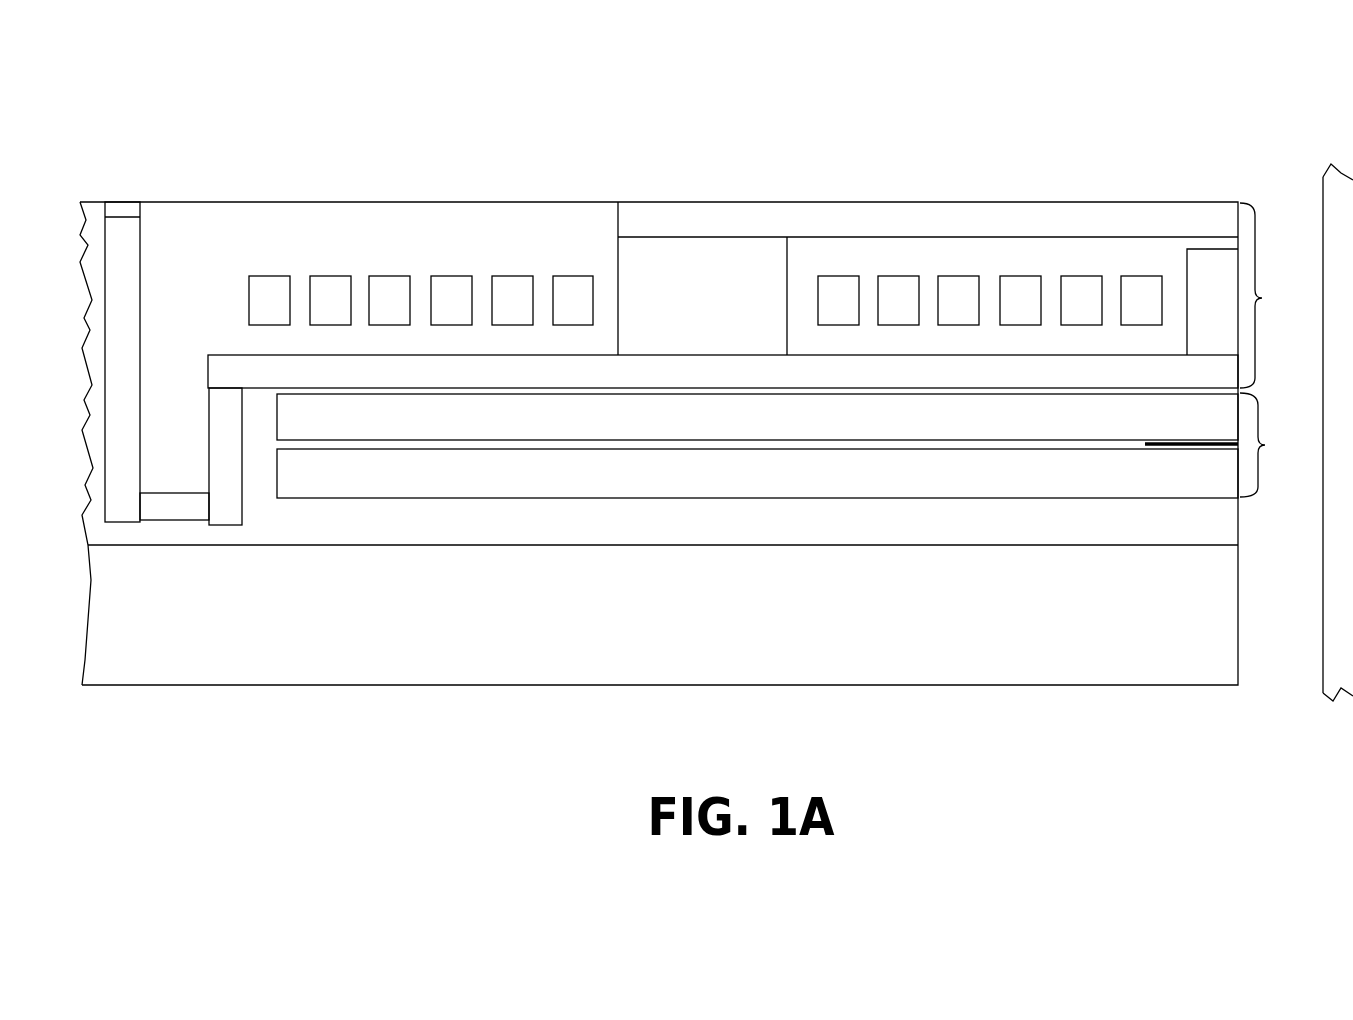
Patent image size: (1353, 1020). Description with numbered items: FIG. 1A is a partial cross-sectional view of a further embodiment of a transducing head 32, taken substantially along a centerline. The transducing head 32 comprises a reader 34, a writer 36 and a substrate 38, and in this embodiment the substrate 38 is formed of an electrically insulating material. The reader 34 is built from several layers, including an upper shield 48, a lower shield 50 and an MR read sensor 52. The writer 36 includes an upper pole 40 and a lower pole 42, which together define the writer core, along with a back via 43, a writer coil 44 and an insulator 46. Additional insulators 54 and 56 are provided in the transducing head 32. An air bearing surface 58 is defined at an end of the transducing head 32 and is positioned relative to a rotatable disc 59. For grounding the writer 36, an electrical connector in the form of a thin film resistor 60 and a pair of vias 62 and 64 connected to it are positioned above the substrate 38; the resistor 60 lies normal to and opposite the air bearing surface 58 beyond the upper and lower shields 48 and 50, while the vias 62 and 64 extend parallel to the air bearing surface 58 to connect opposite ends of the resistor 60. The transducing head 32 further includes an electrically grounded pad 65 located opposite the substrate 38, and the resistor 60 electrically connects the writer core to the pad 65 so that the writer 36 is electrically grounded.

The transducing head 32 is at (718, 120).
The reader 34 is at (1274, 445).
The writer 36 is at (1270, 295).
The substrate 38 is at (1097, 685).
The upper pole 40 is at (1042, 215).
The lower pole 42 is at (553, 355).
The back via 43 is at (682, 262).
The writer coil 44 is at (268, 276).
The insulator 46 is at (1167, 252).
The upper shield 48 is at (1056, 433).
The lower shield 50 is at (1058, 488).
The MR read sensor 52 is at (1240, 446).
The insulator 54 is at (590, 255).
The insulator 56 is at (925, 540).
The air bearing surface 58 is at (1242, 535).
The rotatable disc 59 is at (1335, 210).
The resistor 60 is at (187, 500).
The via 62 is at (222, 412).
The via 64 is at (123, 502).
The electrically grounded pad 65 is at (133, 210).